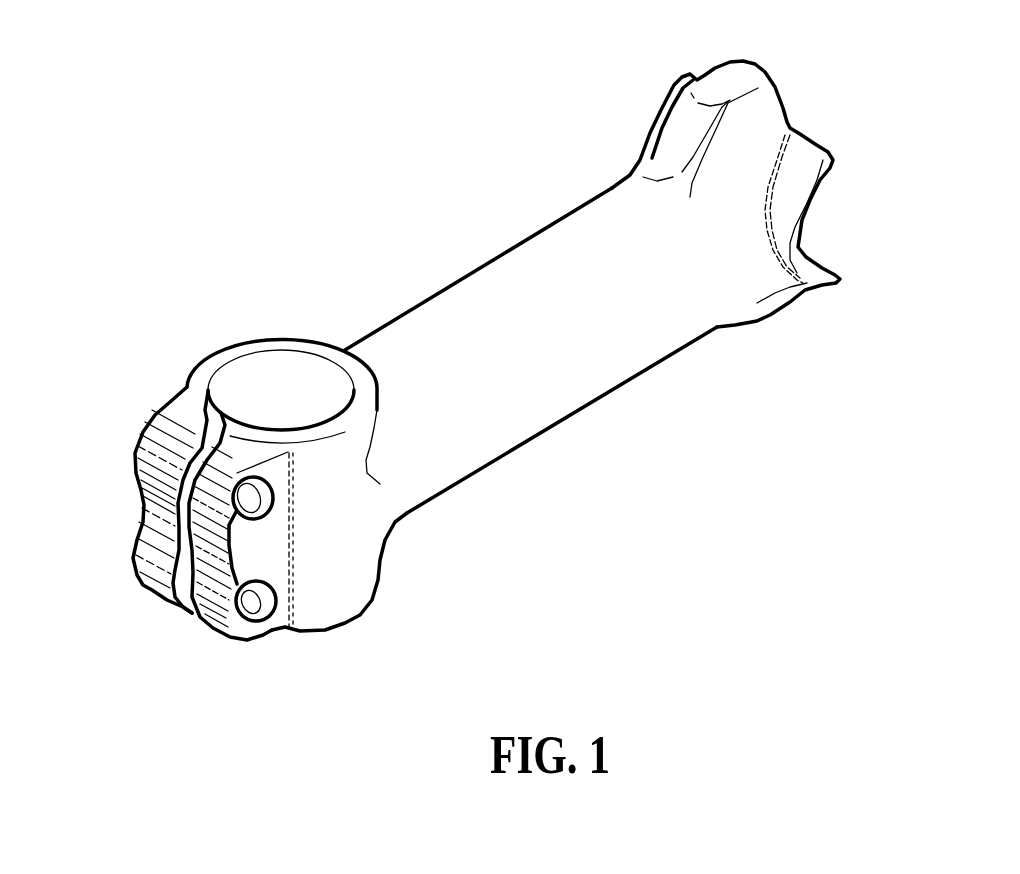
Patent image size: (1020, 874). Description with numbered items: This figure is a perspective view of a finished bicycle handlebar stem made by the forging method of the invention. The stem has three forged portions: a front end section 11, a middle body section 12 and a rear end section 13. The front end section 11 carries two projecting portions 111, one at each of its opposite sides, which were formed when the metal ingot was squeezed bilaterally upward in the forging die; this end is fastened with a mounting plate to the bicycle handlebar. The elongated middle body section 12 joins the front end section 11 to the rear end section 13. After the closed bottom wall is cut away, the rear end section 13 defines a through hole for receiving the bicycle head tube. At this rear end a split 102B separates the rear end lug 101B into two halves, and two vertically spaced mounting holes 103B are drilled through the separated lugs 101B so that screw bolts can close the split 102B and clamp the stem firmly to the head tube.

The front end section 11 is at (793, 124).
The projecting portions 111 is at (743, 78).
The middle body section 12 is at (557, 405).
The rear end section 13 is at (352, 567).
The rear end lug 101B is at (152, 522).
The split 102B is at (181, 567).
The mounting holes 103B is at (250, 503).